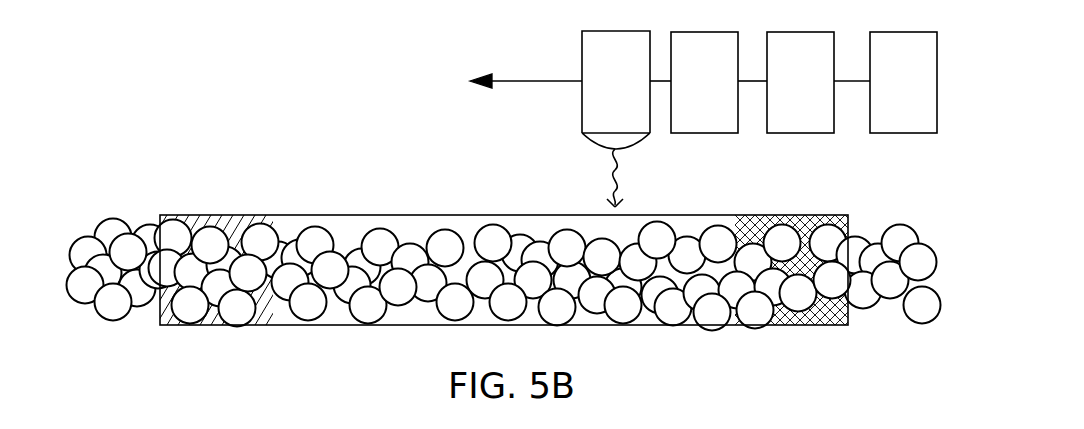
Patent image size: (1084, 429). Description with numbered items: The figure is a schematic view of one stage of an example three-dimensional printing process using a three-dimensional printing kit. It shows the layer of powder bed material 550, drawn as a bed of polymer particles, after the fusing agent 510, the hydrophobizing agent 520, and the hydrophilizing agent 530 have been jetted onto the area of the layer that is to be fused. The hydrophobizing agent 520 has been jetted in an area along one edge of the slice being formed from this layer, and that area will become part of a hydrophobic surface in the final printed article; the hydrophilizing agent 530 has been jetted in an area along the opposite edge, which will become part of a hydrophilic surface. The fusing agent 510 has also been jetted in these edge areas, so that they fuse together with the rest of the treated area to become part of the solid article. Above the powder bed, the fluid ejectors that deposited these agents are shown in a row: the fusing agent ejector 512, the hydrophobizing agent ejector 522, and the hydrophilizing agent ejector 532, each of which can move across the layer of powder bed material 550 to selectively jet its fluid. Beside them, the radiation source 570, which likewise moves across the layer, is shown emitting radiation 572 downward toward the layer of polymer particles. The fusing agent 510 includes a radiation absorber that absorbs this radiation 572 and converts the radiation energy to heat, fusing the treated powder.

The fusing agent 510 is at (405, 237).
The hydrophobizing agent 520 is at (807, 215).
The hydrophilizing agent 530 is at (220, 220).
The layer of powder bed material 550 is at (115, 232).
The radiation source 570 is at (637, 94).
The radiation 572 is at (607, 203).
The hydrophilizing agent ejector 532 is at (725, 94).
The hydrophobizing agent ejector 522 is at (822, 94).
The fusing agent ejector 512 is at (924, 94).